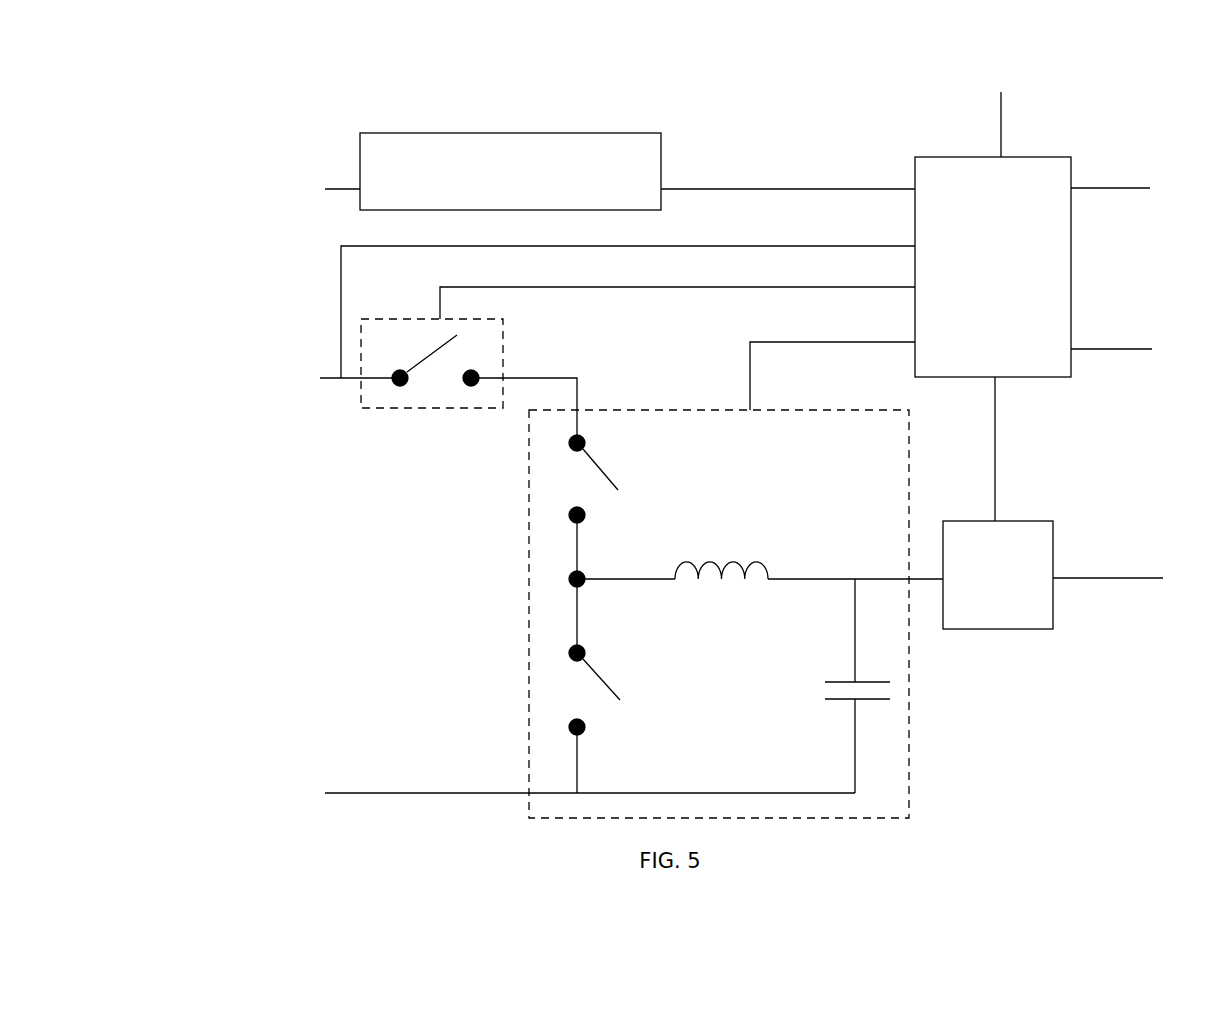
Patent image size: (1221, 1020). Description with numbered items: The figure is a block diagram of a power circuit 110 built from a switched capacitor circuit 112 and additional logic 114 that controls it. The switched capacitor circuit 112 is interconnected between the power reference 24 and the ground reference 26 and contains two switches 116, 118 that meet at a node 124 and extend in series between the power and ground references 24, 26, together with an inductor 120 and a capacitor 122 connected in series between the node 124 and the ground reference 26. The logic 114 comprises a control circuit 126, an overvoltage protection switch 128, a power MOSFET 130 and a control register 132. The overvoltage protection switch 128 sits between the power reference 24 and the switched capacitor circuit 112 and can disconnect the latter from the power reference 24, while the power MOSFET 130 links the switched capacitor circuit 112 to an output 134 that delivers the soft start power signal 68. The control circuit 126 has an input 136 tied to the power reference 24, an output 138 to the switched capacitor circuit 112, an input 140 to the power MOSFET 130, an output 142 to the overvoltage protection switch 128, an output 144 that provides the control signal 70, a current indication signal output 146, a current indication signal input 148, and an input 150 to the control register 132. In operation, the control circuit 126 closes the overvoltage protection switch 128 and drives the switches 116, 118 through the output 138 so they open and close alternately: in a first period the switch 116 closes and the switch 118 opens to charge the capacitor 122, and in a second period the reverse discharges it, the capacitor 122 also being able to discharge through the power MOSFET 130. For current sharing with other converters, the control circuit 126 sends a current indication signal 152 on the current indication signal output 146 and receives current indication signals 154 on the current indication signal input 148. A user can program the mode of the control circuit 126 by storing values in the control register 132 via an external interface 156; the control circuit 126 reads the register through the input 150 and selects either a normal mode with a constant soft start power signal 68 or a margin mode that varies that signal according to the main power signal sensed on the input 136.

The power reference 24 is at (381, 395).
The ground reference 26 is at (520, 785).
The soft start power signal 68 is at (1114, 646).
The control signal 70 is at (1134, 217).
The power circuit 110 is at (1096, 111).
The switched capacitor circuit 112 is at (525, 518).
The additional logic 114 is at (497, 111).
The switch 116 is at (638, 470).
The switch 118 is at (635, 660).
The inductor 120 is at (765, 548).
The capacitor 122 is at (806, 675).
The node 124 is at (590, 578).
The control circuit 126 is at (993, 267).
The overvoltage protection switch 128 is at (503, 346).
The power MOSFET 130 is at (998, 575).
The control register 132 is at (510, 171).
The output 134 is at (1139, 577).
The input 136 is at (752, 244).
The output 138 is at (750, 372).
The input 140 is at (995, 408).
The output 142 is at (681, 290).
The output 144 is at (1136, 186).
The current indication signal output 146 is at (1136, 348).
The current indication signal input 148 is at (1001, 140).
The input 150 is at (710, 188).
The current indication signal 152 is at (1144, 403).
The current indication signals 154 is at (937, 102).
The external interface 156 is at (263, 171).